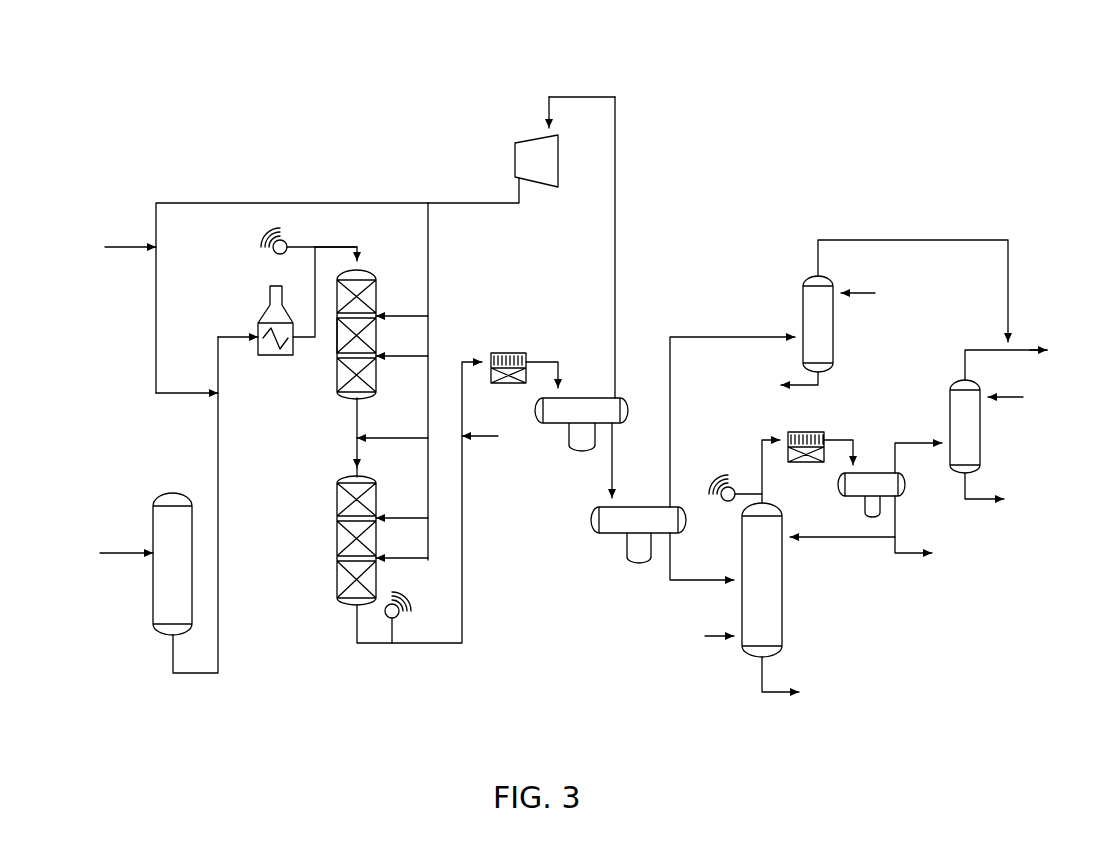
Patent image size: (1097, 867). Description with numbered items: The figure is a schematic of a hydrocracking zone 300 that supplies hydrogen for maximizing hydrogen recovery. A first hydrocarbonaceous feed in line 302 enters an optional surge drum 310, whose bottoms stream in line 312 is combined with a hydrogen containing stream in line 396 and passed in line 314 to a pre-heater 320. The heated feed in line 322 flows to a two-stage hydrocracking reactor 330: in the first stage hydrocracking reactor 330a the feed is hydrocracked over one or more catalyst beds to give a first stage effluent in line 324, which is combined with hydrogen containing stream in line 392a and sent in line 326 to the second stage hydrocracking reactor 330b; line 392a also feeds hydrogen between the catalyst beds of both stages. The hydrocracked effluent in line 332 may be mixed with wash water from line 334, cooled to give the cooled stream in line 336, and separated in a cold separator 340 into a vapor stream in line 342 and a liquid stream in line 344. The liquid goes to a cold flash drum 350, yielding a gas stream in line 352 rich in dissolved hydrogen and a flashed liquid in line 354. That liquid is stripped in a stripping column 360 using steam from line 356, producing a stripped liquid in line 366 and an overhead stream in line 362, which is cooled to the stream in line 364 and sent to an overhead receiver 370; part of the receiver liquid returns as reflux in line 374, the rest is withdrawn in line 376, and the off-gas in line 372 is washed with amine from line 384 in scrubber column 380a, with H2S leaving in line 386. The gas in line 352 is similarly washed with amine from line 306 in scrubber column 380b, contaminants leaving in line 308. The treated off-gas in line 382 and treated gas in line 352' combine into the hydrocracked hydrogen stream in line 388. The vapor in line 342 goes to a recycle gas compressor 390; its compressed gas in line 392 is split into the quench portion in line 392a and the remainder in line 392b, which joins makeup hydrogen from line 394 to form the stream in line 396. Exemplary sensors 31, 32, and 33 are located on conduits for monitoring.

The hydrocracking zone 300 is at (275, 145).
The first hydrocarbonaceous feed line 302 is at (122, 555).
The amine solution line to scrubber column 380b 306 is at (860, 293).
The contaminant withdrawal line 308 is at (797, 384).
The sensor 31 is at (316, 249).
The surge drum 310 is at (215, 494).
The bottoms stream line 312 is at (222, 655).
The pre-heater feed line 314 is at (226, 336).
The sensor 32 is at (396, 640).
The pre-heater 320 is at (272, 295).
The heated first hydrocarbonaceous feed line 322 is at (350, 246).
The first stage hydrocracked effluent stream line 324 is at (355, 436).
The second stage reactor feed line 326 is at (355, 455).
The sensor 33 is at (760, 491).
The hydrocracking reactor 330 is at (378, 292).
The first stage hydrocracking reactor 330a is at (336, 340).
The second stage hydrocracking reactor 330b is at (336, 514).
The hydrocracked effluent stream line 332 is at (425, 648).
The wash water stream line 334 is at (480, 438).
The cooled hydrocracked effluent stream line 336 is at (557, 378).
The cold separator 340 is at (628, 412).
The vapor stream line 342 is at (617, 204).
The liquid stream line 344 is at (611, 490).
The cold flash drum 350 is at (600, 518).
The gas stream line 352 is at (732, 407).
The treated gas stream line 352' is at (913, 276).
The liquid stream line 354 is at (690, 582).
The steam line 356 is at (722, 640).
The stripping column 360 is at (786, 578).
The overhead stream line 362 is at (760, 457).
The cooled stream line 364 is at (830, 437).
The stripped liquid stream line 366 is at (788, 690).
The overhead receiver 370 is at (845, 490).
The stripping column off-gas stream line 372 is at (940, 443).
The reflux stream line 374 is at (855, 538).
The overhead liquid withdrawal line 376 is at (930, 560).
The scrubber column 380a is at (948, 402).
The scrubber column 380b is at (835, 342).
The treated stripping column off-gas stream line 382 is at (968, 351).
The amine solution line to scrubber column 380a 384 is at (1000, 399).
The H2S withdrawal line 386 is at (988, 498).
The combined stream line 388 is at (1023, 350).
The recycle gas compressor 390 is at (540, 140).
The compressed gas stream line 392 is at (512, 203).
The hydrogen containing stream line 392a is at (431, 268).
The remaining compressed gas stream line 392b is at (308, 203).
The makeup hydrogen stream line 394 is at (130, 250).
The hydrogen containing stream line 396 is at (155, 390).